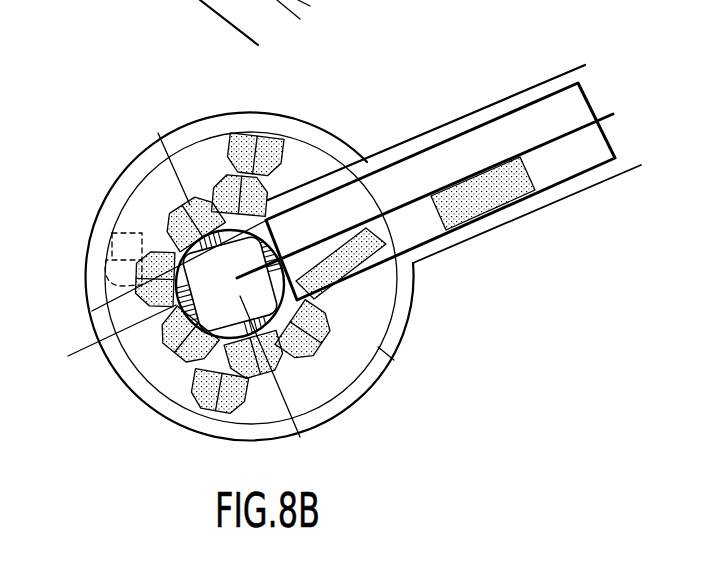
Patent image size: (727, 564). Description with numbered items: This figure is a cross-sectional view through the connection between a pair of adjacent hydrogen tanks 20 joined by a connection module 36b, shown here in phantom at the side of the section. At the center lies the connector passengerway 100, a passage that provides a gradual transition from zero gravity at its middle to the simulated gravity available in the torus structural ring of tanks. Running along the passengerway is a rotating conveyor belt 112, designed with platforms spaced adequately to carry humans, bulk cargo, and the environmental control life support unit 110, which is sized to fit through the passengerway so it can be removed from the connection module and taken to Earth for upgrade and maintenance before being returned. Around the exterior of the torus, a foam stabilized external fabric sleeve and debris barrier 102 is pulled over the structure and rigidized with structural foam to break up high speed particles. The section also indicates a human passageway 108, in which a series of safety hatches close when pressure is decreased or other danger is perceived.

The hydrogen tank 20 is at (395, 365).
The connection module 36b is at (142, 212).
The connector passengerway 100 is at (472, 137).
The external fabric sleeve and debris barrier 102 is at (414, 298).
The human passageway 108 is at (297, 340).
The environmental control life support unit 110 is at (277, 147).
The rotating conveyor belt 112 is at (556, 125).